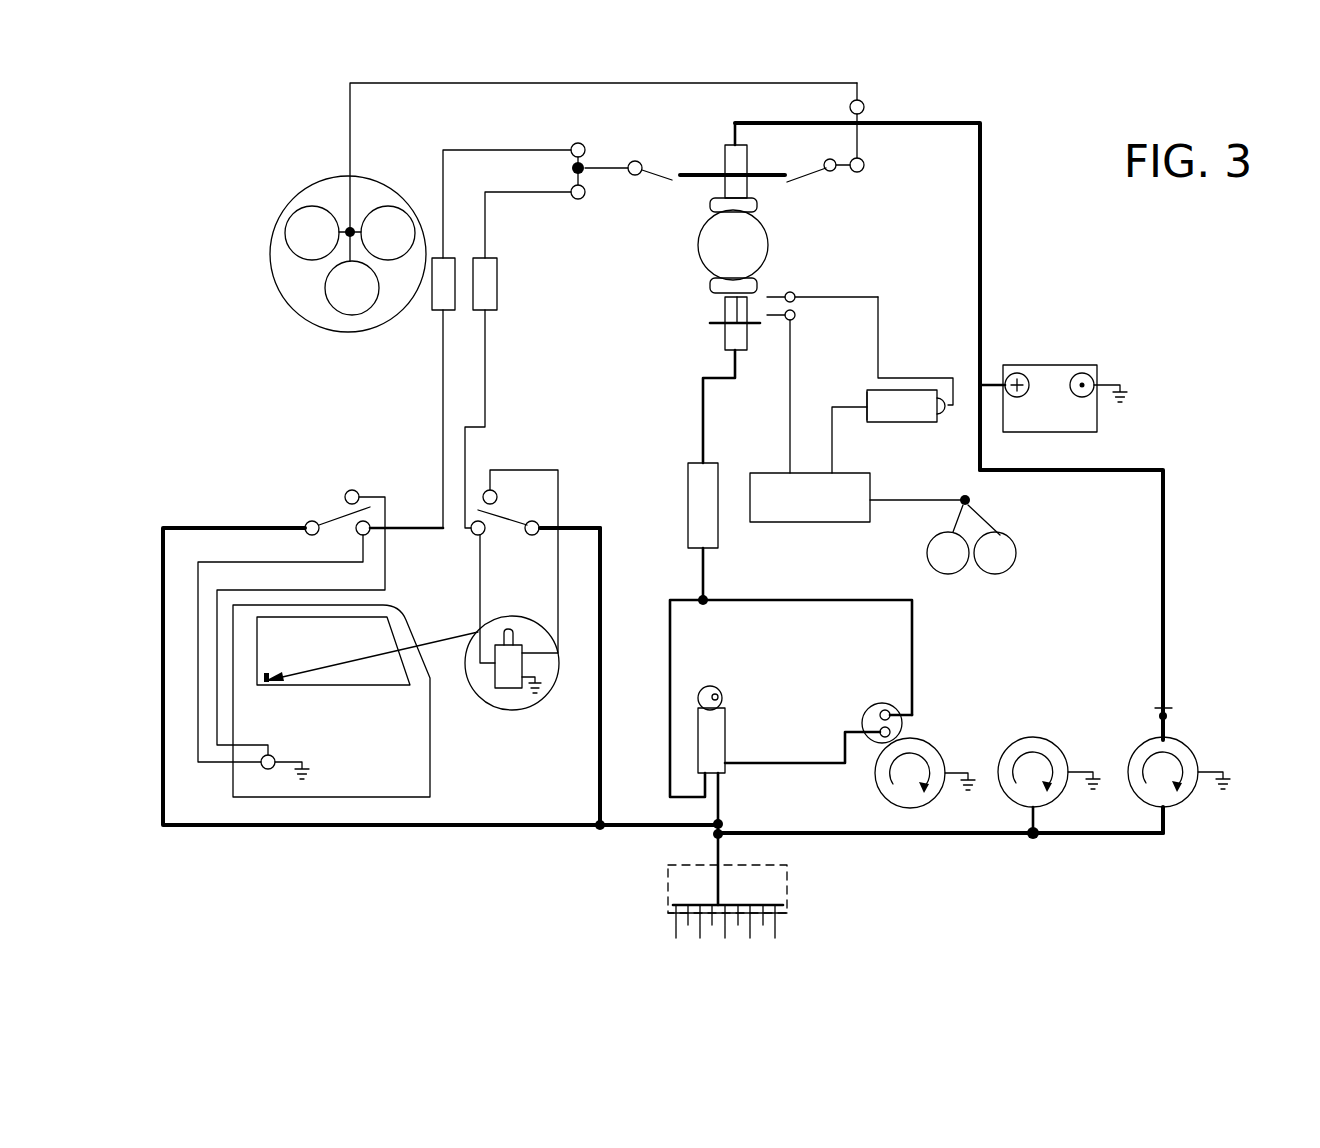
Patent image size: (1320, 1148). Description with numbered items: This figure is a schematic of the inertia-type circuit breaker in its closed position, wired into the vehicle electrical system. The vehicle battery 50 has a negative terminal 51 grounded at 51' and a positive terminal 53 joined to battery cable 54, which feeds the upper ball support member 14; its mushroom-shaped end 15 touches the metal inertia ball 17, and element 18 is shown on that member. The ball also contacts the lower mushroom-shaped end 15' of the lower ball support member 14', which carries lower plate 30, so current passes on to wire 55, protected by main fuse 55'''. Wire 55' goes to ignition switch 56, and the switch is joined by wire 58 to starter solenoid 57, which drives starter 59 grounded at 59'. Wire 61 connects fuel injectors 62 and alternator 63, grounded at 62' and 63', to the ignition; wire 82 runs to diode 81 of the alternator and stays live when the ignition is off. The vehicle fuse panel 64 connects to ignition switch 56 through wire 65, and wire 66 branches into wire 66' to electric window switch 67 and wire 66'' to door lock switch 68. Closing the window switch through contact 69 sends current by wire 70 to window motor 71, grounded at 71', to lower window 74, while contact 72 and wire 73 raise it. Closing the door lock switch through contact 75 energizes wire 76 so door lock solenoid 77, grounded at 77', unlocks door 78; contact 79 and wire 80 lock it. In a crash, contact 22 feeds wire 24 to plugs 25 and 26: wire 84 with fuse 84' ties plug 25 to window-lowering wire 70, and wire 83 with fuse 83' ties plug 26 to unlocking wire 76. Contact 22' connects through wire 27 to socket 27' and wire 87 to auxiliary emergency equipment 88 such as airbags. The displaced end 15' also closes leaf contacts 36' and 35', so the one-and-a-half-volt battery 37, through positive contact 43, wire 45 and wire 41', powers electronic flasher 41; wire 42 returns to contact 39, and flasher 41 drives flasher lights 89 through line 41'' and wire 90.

The upper ball support member 14 is at (713, 158).
The lower ball support member 14' is at (712, 323).
The mushroom-shaped ball retaining portion 15 is at (702, 211).
The mushroom-shaped ball retaining portion 15' is at (704, 297).
The inertia ball 17 is at (770, 257).
The upper contact plate 18 is at (768, 173).
The contact 22 is at (668, 136).
The contact 22' is at (847, 188).
The wire 24 is at (636, 160).
The recess plug 25 is at (590, 146).
The recess plug 26 is at (585, 198).
The wire 27 is at (888, 144).
The electrical socket 27' is at (886, 95).
The lower plate 30 is at (713, 322).
The leaf electrical contact 35' is at (822, 315).
The leaf electrical contact 36' is at (754, 367).
The battery 37 is at (905, 413).
The contact 39 is at (867, 410).
The electronic flash circuit 41 is at (810, 515).
The wire 41' is at (768, 396).
The control output lead 41'' is at (917, 537).
The wire 42 is at (832, 447).
The positive contact 43 is at (943, 415).
The wire 45 is at (882, 378).
The vehicle battery 50 is at (1062, 365).
The negative terminal 51 is at (1099, 364).
The ground 51' is at (1139, 374).
The positive terminal 53 is at (1020, 374).
The battery cable 54 is at (957, 122).
The wire 55 is at (685, 477).
The wire 55' is at (767, 696).
The main circuit fuse 55''' is at (678, 491).
The ignition switch 56 is at (728, 727).
The starter solenoid 57 is at (863, 712).
The wire 58 is at (817, 760).
The starter 59 is at (920, 749).
The ground 59' is at (973, 753).
The wire 61 is at (1020, 838).
The fuel injectors 62 is at (1040, 762).
The ground 62' is at (1095, 756).
The alternator 63 is at (1181, 769).
The ground 63' is at (1241, 763).
The ground plate 64 is at (790, 885).
The wire 65 is at (713, 855).
The wire 66 is at (659, 850).
The wire 66' is at (381, 681).
The wire 66'' is at (627, 676).
The electric window switch 67 is at (340, 513).
The electric door lock switch 68 is at (497, 517).
The contact 69 is at (357, 537).
The wire 70 is at (218, 562).
The electric window motor 71 is at (284, 732).
The ground 71' is at (319, 747).
The contact 72 is at (350, 490).
The wire 73 is at (387, 512).
The window 74 is at (363, 632).
The contact 75 is at (475, 537).
The wire 76 is at (478, 577).
The door lock solenoid 77 is at (411, 672).
The ground 77' is at (561, 675).
The door 78 is at (432, 768).
The contact 79 is at (497, 496).
The wire 80 is at (560, 502).
The diode 81 is at (1160, 716).
The wire 82 is at (1118, 470).
The wire 83 is at (518, 360).
The fuse 83' is at (505, 260).
The wire 84 is at (489, 339).
The fuse 84' is at (456, 260).
The wire 87 is at (348, 103).
The auxiliary emergency equipment 88 is at (293, 318).
The flasher lights 89 is at (960, 572).
The wire 90 is at (933, 500).